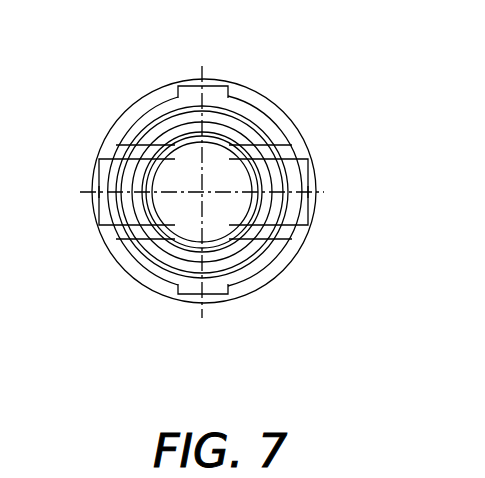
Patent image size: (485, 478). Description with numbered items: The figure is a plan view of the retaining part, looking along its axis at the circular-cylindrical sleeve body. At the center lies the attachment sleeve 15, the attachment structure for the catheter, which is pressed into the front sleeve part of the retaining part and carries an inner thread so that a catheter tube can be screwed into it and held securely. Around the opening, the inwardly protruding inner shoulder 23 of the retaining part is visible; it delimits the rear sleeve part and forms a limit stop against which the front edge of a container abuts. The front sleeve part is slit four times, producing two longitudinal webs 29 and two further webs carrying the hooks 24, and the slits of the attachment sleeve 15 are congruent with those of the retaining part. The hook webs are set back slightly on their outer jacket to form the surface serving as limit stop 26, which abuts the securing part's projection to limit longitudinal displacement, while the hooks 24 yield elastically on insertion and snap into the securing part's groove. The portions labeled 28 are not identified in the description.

The attachment sleeve 15 is at (173, 125).
The inner shoulder 23 is at (210, 85).
The hooks 24 is at (91, 199).
The limit stop 26 is at (136, 276).
The clamp blocks 28 is at (115, 152).
The longitudinal webs 29 is at (194, 298).